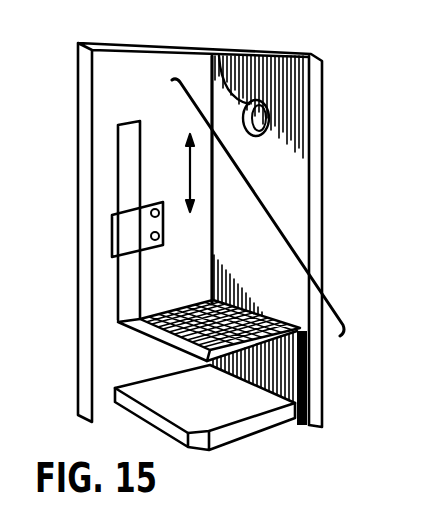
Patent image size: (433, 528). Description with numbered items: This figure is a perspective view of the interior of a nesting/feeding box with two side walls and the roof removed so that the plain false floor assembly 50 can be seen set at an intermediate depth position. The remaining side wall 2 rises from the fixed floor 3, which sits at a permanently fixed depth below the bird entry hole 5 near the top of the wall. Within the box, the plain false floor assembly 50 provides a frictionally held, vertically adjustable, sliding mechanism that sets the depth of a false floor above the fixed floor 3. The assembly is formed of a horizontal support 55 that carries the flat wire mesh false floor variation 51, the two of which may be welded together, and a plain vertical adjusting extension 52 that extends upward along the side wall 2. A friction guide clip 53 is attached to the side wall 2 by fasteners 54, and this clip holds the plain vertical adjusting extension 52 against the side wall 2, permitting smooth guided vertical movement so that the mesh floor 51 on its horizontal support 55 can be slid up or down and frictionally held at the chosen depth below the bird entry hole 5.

The side wall 2 is at (203, 132).
The fixed floor 3 is at (249, 430).
The bird entry hole 5 is at (233, 53).
The plain false floor assembly 50 is at (261, 201).
The flat wire mesh false floor variation 51 is at (310, 369).
The plain vertical adjusting extension 52 is at (123, 152).
The friction guide clip 53 is at (119, 232).
The fasteners 54 is at (167, 213).
The horizontal support 55 is at (158, 331).